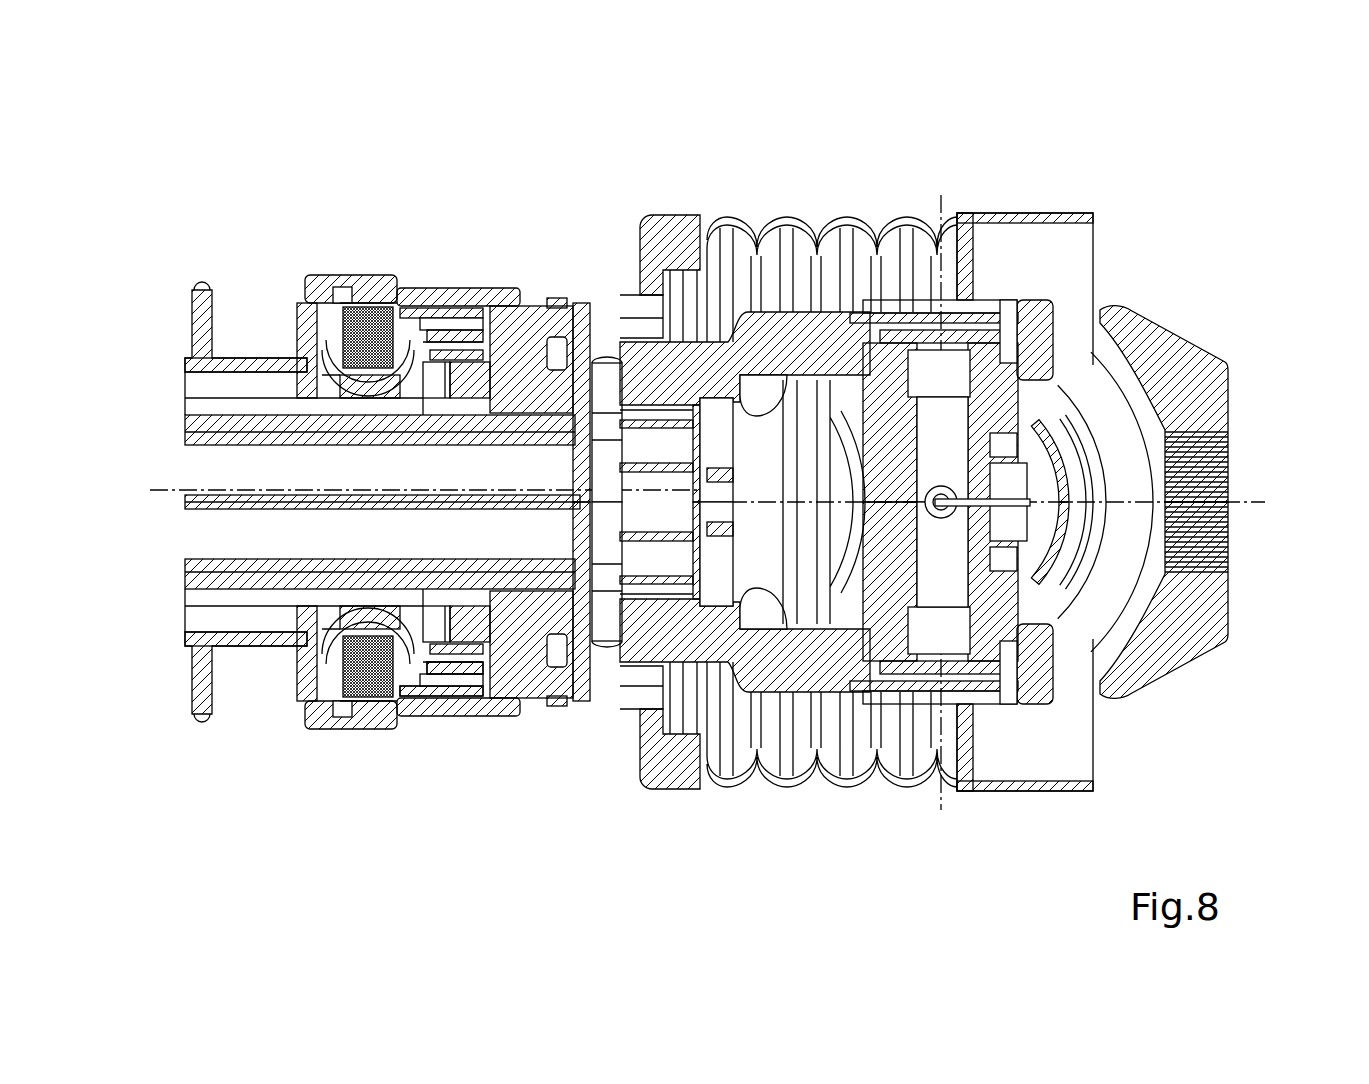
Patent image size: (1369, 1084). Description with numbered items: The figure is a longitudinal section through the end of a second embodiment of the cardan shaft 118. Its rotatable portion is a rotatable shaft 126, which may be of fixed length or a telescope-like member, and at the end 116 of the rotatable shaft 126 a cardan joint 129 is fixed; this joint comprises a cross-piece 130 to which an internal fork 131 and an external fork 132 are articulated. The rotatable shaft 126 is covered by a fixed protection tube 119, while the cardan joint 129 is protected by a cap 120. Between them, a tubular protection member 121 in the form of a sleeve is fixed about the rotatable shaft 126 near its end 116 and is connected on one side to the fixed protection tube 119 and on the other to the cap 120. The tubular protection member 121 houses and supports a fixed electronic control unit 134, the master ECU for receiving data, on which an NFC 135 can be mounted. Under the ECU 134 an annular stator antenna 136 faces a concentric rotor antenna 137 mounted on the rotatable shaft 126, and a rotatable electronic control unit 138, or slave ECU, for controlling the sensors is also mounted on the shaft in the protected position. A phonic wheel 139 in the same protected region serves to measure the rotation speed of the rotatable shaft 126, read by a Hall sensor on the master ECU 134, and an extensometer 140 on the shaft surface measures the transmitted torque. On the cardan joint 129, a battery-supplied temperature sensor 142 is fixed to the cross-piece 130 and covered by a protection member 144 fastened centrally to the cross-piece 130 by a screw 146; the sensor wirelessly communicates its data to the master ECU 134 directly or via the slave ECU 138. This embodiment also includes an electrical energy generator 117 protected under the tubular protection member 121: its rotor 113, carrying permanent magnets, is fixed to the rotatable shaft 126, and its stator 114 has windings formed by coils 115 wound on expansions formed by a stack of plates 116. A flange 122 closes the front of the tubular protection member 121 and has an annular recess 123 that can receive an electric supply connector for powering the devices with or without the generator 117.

The rotor 113 is at (360, 618).
The stator 114 is at (324, 266).
The coils 115 is at (410, 387).
The end of the rotatable shaft; stack of plates 116 is at (345, 330).
The electrical energy generator 117 is at (358, 399).
The cardan shaft 118 is at (396, 152).
The fixed protection tube 119 is at (203, 367).
The cap 120 is at (870, 263).
The tubular protection member 121 is at (363, 285).
The flange 122 is at (196, 320).
The annular recess 123 is at (260, 666).
The rotatable shaft 126 is at (203, 596).
The cardan joint 129 is at (1115, 276).
The cross-piece 130 is at (963, 370).
The internal fork 131 is at (773, 437).
The external fork 132 is at (1100, 617).
The electronic control unit 134 is at (470, 350).
The NFC 135 is at (433, 315).
The annular stator antenna 136 is at (472, 352).
The rotor antenna 137 is at (480, 637).
The rotatable electronic control unit 138 is at (483, 637).
The phonic wheel 139 is at (437, 630).
The extensometer 140 is at (433, 607).
The temperature sensor 142 is at (1012, 476).
The protection member 144 is at (1022, 490).
The screw 146 is at (1007, 505).